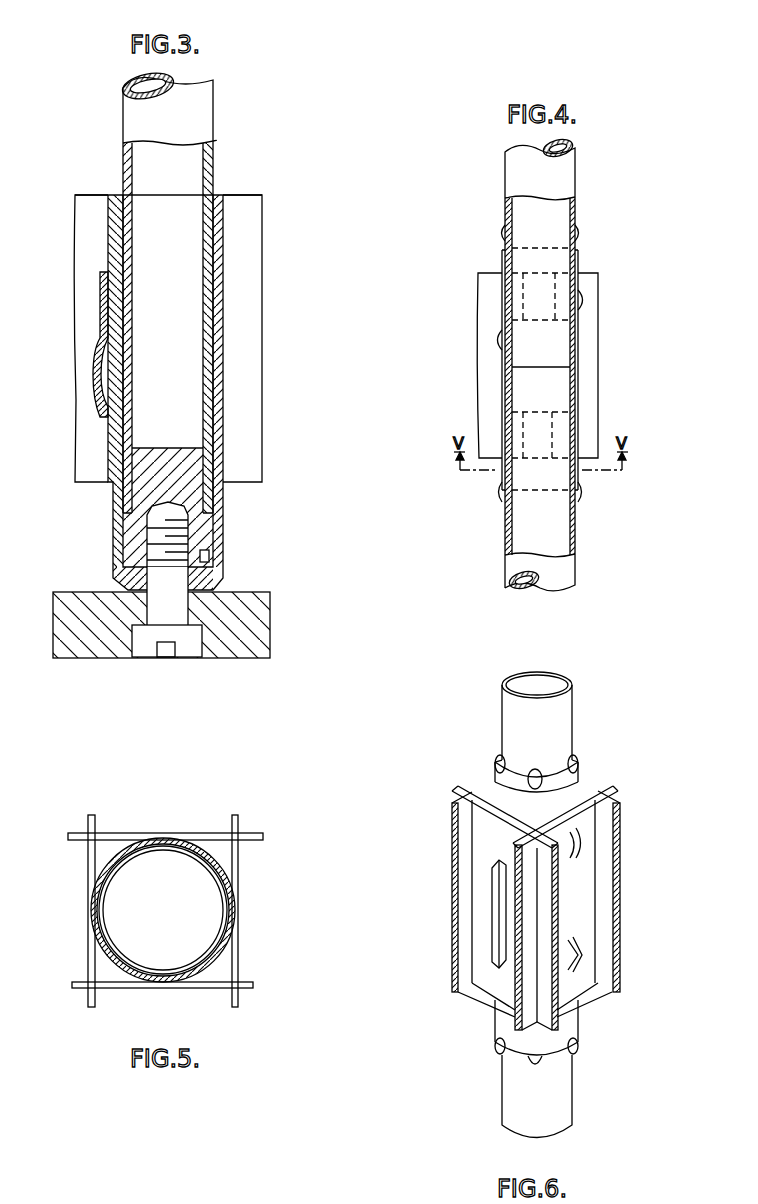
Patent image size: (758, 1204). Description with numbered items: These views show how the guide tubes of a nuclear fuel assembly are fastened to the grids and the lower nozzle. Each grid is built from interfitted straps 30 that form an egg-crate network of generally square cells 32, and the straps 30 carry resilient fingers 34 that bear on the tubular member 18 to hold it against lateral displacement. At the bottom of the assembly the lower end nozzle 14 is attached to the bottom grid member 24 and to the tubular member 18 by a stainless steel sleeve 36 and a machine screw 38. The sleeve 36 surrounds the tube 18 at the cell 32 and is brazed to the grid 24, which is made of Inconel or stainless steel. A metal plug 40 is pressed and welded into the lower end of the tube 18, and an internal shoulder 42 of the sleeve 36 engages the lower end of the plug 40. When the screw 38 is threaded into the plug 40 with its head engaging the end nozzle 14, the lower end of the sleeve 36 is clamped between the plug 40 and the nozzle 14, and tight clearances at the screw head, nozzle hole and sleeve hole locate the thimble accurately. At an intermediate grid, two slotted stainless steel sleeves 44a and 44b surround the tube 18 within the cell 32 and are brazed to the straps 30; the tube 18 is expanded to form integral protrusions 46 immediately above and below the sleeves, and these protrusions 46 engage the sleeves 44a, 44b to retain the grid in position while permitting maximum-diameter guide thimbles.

In FIG. 3, the lower end nozzle 14 is at (270, 633).
In FIG. 3, the tubular member 18 is at (133, 118).
In FIG. 4, the tubular member 18 is at (570, 178).
In FIG. 5, the tubular member 18 is at (163, 910).
In FIG. 6, the tubular member 18 is at (508, 712).
In FIG. 3, the bottom grid member 24 is at (262, 393).
In FIG. 3, the strap 30 is at (262, 316).
In FIG. 4, the strap 30 is at (600, 372).
In FIG. 5, the strap 30 is at (238, 822).
In FIG. 6, the strap 30 is at (455, 895).
In FIG. 6, the opening or cell 32 is at (495, 788).
In FIG. 3, the resilient finger 34 is at (95, 365).
In FIG. 4, the resilient finger 34 is at (583, 300).
In FIG. 3, the sleeve 36 is at (223, 506).
In FIG. 3, the machine screw 38 is at (185, 657).
In FIG. 3, the metal plug 40 is at (140, 494).
In FIG. 3, the internal shoulder 42 is at (207, 551).
In FIG. 4, the stainless steel sleeve 44a is at (503, 256).
In FIG. 6, the stainless steel sleeve 44a is at (580, 788).
In FIG. 4, the stainless steel sleeve 44b is at (503, 480).
In FIG. 5, the stainless steel sleeve 44b is at (222, 858).
In FIG. 6, the stainless steel sleeve 44b is at (565, 1025).
In FIG. 4, the protrusion 46 is at (580, 236).
In FIG. 6, the protrusion 46 is at (575, 760).